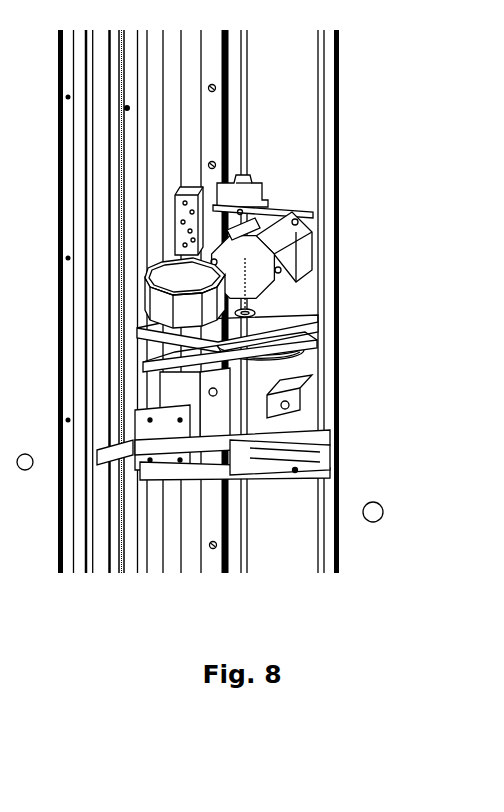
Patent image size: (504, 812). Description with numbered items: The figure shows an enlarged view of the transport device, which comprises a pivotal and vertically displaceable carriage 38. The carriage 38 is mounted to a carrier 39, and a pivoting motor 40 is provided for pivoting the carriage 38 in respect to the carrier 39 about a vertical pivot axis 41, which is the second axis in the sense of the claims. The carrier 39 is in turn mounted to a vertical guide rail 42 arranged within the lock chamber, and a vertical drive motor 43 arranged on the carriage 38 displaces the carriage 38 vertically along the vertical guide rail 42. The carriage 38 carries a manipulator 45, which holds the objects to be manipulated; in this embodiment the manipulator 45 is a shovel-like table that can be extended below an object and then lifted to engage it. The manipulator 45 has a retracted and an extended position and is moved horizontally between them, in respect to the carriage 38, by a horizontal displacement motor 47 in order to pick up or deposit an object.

The carriage 38 is at (264, 386).
The carrier 39 is at (301, 345).
The pivoting motor 40 is at (118, 265).
The vertical pivot axis 41 is at (297, 264).
The vertical guide rail 42 is at (302, 301).
The vertical drive motor 43 is at (306, 195).
The manipulator 45 is at (245, 489).
The horizontal displacement motor 47 is at (327, 410).